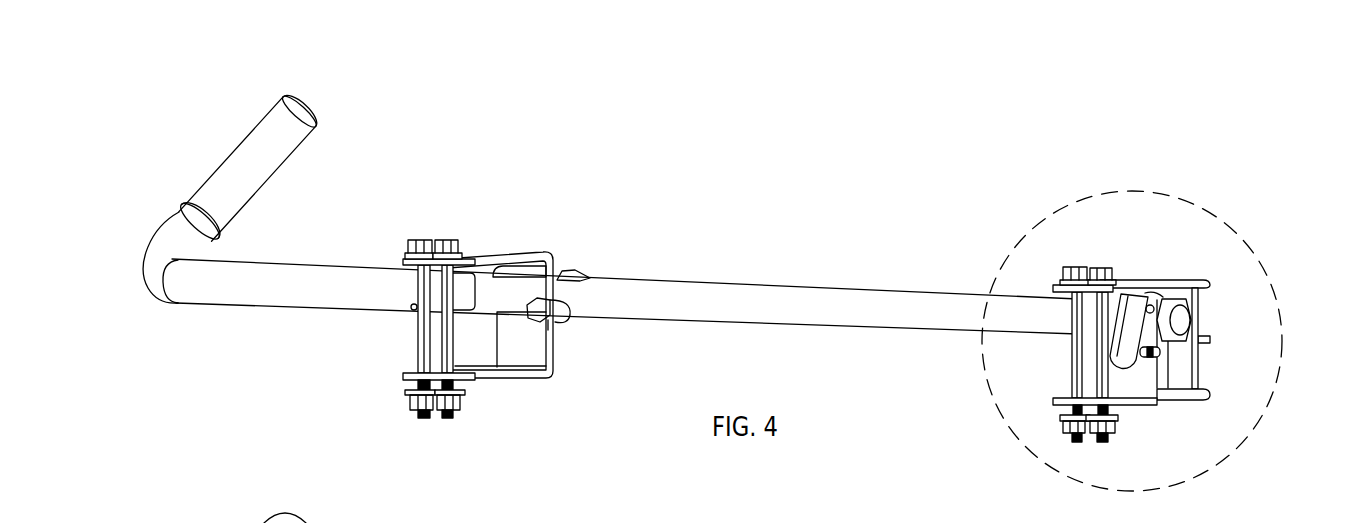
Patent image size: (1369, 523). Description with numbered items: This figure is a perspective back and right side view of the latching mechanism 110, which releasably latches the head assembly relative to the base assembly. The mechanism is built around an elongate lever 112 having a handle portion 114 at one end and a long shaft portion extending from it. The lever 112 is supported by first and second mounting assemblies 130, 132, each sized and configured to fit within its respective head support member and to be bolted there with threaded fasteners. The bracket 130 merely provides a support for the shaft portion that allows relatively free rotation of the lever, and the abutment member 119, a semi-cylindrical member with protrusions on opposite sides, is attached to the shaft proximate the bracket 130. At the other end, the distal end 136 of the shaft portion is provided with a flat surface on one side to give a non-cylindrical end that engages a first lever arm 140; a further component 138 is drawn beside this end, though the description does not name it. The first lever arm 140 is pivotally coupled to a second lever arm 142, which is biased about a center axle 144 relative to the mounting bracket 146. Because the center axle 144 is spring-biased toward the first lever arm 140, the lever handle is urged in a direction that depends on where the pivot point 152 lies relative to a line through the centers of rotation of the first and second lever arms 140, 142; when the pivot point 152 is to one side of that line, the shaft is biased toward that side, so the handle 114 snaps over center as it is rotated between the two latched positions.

The latching mechanism 110 is at (790, 232).
The elongate lever 112 is at (833, 318).
The handle portion 114 is at (219, 167).
The abutment member 119 is at (572, 268).
The first mounting bracket 130 is at (512, 253).
The second mounting bracket 132 is at (1168, 277).
The distal end of the shaft portion 136 is at (1187, 318).
The hex nut 138 is at (1167, 312).
The first lever arm 140 is at (1152, 300).
The second lever arm 142 is at (1133, 343).
The center axle 144 is at (1147, 357).
The mounting bracket 146 is at (1193, 366).
The pivot point 152 is at (1157, 293).